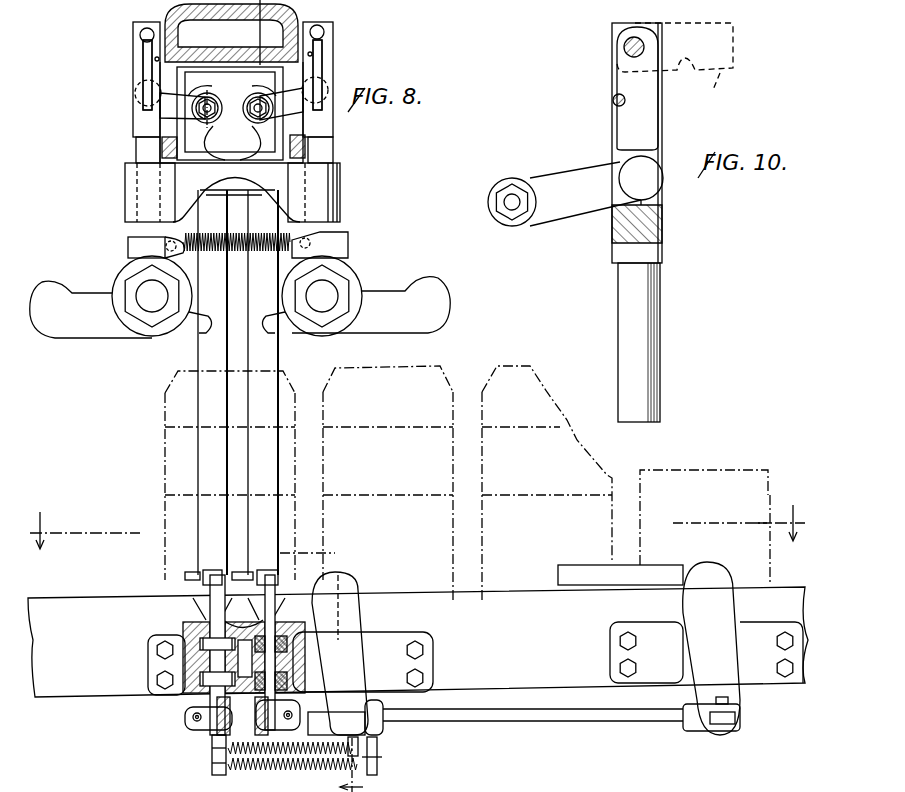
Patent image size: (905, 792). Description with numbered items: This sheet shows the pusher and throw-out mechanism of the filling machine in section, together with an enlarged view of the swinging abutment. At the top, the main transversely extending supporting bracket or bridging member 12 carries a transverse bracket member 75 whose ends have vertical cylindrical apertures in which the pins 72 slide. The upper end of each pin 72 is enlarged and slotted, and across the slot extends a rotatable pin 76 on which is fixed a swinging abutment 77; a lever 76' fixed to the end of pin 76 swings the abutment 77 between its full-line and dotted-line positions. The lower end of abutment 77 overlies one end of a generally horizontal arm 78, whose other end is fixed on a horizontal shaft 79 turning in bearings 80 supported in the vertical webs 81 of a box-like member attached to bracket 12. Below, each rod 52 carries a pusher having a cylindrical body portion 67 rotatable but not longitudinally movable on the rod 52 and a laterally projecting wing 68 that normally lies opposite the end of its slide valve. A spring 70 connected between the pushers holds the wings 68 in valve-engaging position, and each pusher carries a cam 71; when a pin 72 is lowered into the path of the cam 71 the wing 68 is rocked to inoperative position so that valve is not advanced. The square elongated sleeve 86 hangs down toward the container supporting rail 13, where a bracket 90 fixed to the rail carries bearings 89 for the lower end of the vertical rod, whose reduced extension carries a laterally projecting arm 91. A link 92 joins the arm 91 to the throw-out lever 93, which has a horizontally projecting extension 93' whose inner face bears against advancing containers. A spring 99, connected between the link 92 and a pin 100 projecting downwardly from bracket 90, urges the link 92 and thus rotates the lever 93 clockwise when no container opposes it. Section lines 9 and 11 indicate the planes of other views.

In FIG. 8, the bridging member 12 is at (160, 12).
In FIG. 8, the rotatable pin 76 is at (223, 75).
In FIG. 10, the rotatable pin 76 is at (603, 71).
In FIG. 8, the lever 76' is at (230, 75).
In FIG. 10, the swinging abutment 77 is at (648, 94).
In FIG. 8, the arm 78 is at (231, 98).
In FIG. 10, the arm 78 is at (563, 208).
In FIG. 8, the horizontal shaft 79 is at (232, 114).
In FIG. 10, the horizontal shaft 79 is at (512, 200).
In FIG. 8, the bearings 80 is at (231, 113).
In FIG. 8, the vertical webs 81 is at (190, 126).
In FIG. 8, the pin 72 is at (140, 143).
In FIG. 10, the pin 72 is at (652, 298).
In FIG. 8, the transverse bracket member 75 is at (133, 192).
In FIG. 8, the spring 70 is at (242, 256).
In FIG. 8, the cam 71 is at (145, 245).
In FIG. 8, the cylindrical body portion 67 is at (136, 325).
In FIG. 8, the rod 52 is at (150, 296).
In FIG. 8, the laterally projecting wing 68 is at (42, 282).
In FIG. 8, the elongated sleeve 86 is at (262, 388).
In FIG. 8, the section line 9- 9 is at (413, 518).
In FIG. 8, the conveyor supporting rail 13 is at (412, 597).
In FIG. 8, the horizontally projecting extension 93' is at (620, 590).
In FIG. 8, the bearings 89 is at (205, 645).
In FIG. 8, the bracket 90 is at (196, 630).
In FIG. 8, the laterally projecting arm 91 is at (282, 712).
In FIG. 8, the pin 100 is at (212, 752).
In FIG. 8, the spring 99 is at (235, 775).
In FIG. 8, the link 92 is at (447, 722).
In FIG. 8, the throw-out lever 93 is at (732, 648).
In FIG. 8, the section line 11 is at (340, 765).